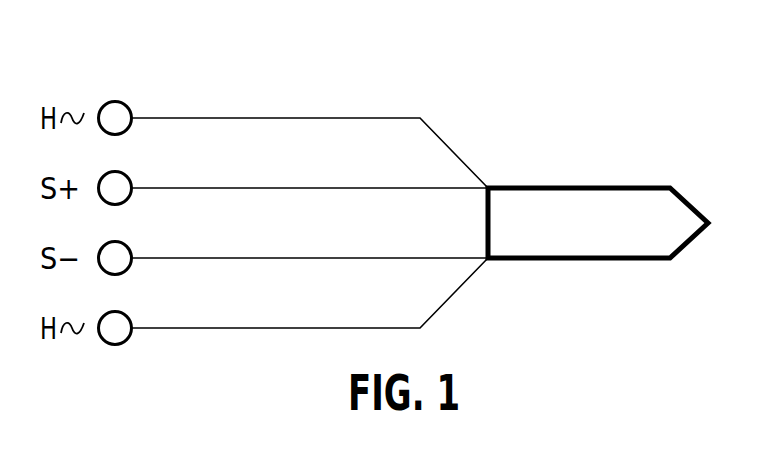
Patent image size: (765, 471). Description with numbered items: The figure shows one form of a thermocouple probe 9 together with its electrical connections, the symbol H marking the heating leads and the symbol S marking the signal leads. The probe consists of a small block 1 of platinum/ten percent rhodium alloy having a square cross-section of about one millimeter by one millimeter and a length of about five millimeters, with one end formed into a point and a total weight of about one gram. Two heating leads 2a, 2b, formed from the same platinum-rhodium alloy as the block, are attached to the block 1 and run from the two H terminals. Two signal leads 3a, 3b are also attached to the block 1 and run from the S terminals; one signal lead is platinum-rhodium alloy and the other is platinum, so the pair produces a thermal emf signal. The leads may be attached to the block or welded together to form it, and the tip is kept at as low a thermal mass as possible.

The small block 1 is at (615, 187).
The heating lead 2a is at (252, 117).
The heating lead 2b is at (247, 328).
The signal lead 3a is at (392, 187).
The signal lead 3b is at (397, 260).
The thermocouple probe 9 is at (596, 106).